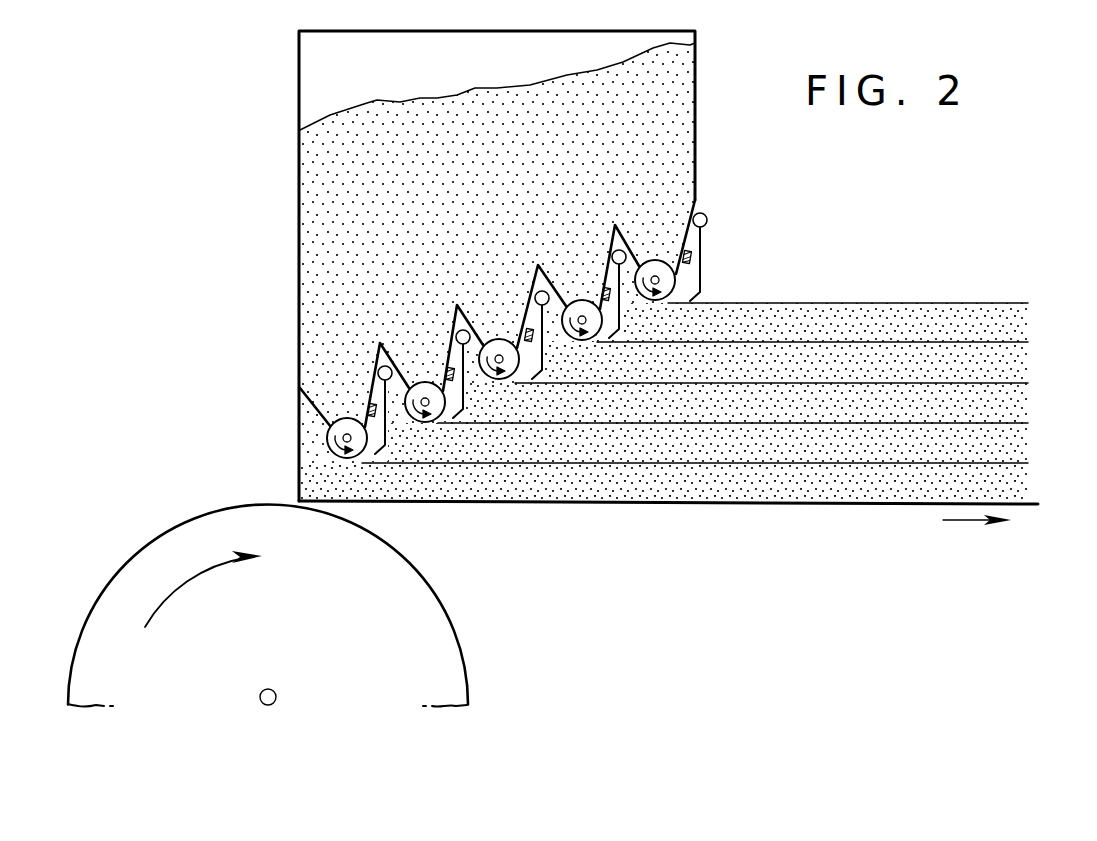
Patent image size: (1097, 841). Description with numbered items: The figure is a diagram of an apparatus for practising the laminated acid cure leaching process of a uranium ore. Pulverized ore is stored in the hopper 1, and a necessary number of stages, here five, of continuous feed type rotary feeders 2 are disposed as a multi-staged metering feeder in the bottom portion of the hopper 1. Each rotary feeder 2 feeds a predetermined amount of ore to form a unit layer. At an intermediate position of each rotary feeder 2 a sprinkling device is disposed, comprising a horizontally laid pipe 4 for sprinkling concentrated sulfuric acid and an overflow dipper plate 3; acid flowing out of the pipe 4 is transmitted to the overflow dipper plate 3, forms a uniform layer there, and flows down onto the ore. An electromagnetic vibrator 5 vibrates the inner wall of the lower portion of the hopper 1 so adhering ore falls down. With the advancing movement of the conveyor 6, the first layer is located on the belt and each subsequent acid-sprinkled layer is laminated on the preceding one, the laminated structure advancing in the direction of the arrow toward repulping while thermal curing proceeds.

The hopper 1 is at (371, 88).
The rotary feeder 2 is at (349, 419).
The overflow dipper plate 3 is at (388, 424).
The pipe for sprinkling concentrated sulfuric acid 4 is at (391, 366).
The electromagnetic vibrator 5 is at (380, 421).
The conveyor 6 is at (760, 505).